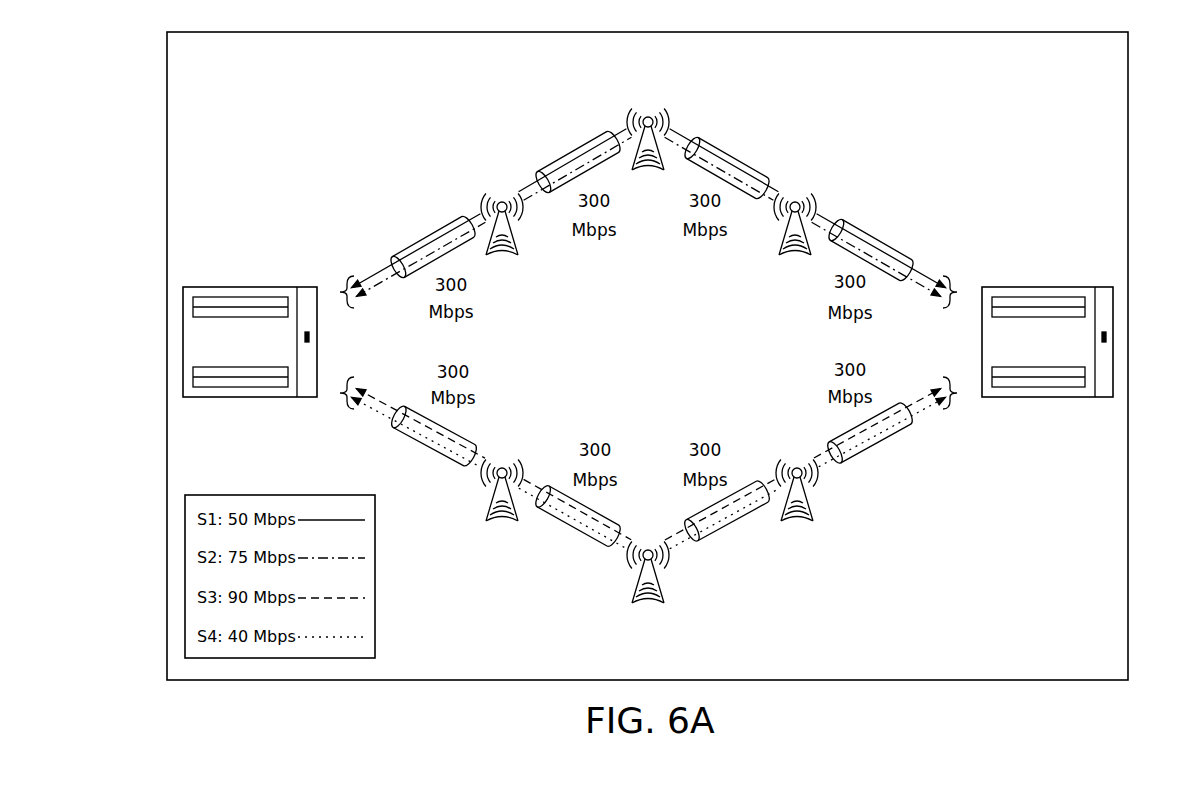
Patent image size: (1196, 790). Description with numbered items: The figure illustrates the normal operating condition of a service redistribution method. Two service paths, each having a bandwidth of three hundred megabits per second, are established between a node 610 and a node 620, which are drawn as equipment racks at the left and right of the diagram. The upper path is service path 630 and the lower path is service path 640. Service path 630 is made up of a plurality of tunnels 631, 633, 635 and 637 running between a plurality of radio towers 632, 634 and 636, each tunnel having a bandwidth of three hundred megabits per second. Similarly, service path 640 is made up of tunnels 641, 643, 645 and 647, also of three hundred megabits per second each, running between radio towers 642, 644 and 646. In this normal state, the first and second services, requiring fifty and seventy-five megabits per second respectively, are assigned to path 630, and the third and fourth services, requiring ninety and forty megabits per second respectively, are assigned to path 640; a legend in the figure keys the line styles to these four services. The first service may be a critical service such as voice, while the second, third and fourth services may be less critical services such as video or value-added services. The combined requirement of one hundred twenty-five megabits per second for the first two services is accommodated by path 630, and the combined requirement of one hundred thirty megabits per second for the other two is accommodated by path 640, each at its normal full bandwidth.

The node 610 is at (183, 342).
The node 620 is at (1113, 340).
The service path 630 is at (339, 291).
The tunnel 631 is at (428, 233).
The radio tower 632 is at (500, 258).
The tunnel 633 is at (570, 150).
The radio tower 634 is at (647, 172).
The tunnel 635 is at (730, 152).
The radio tower 636 is at (797, 258).
The tunnel 637 is at (878, 235).
The service path 640 is at (339, 394).
The tunnel 641 is at (430, 457).
The radio tower 642 is at (501, 527).
The tunnel 643 is at (567, 542).
The radio tower 644 is at (647, 608).
The tunnel 645 is at (733, 542).
The radio tower 646 is at (799, 527).
The tunnel 647 is at (880, 458).